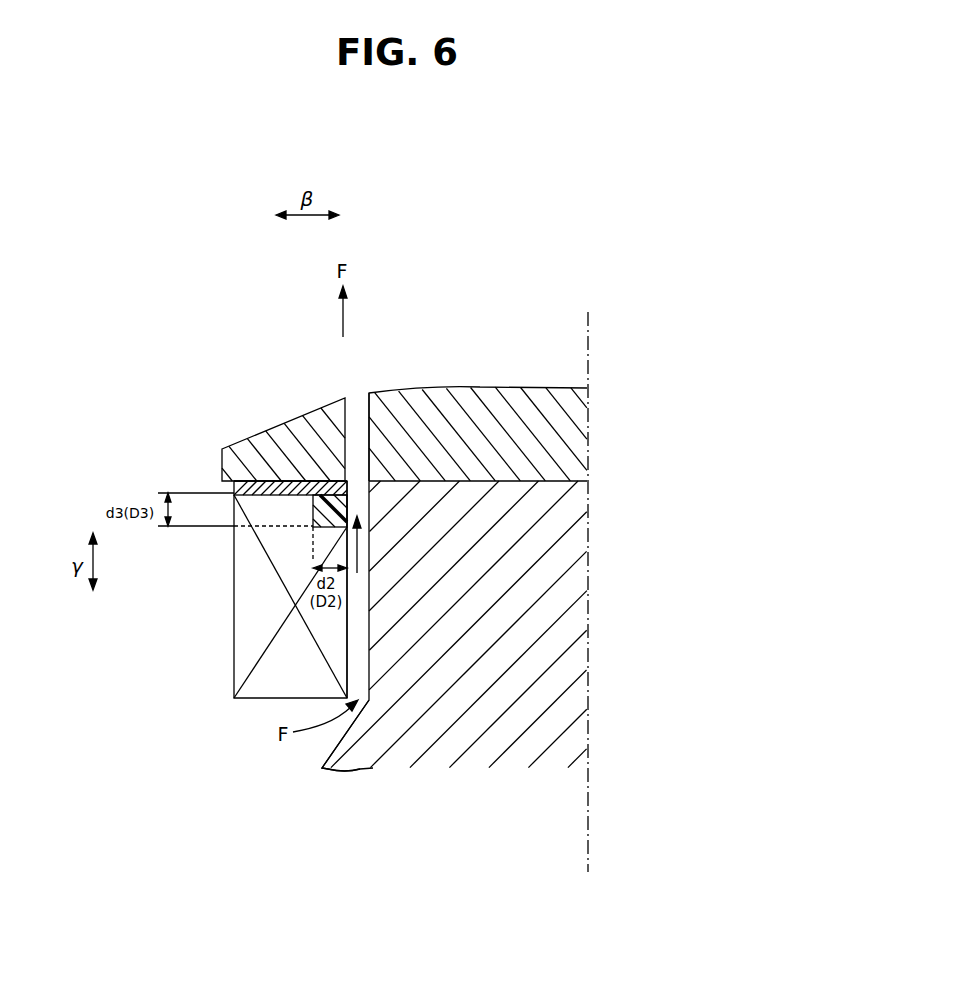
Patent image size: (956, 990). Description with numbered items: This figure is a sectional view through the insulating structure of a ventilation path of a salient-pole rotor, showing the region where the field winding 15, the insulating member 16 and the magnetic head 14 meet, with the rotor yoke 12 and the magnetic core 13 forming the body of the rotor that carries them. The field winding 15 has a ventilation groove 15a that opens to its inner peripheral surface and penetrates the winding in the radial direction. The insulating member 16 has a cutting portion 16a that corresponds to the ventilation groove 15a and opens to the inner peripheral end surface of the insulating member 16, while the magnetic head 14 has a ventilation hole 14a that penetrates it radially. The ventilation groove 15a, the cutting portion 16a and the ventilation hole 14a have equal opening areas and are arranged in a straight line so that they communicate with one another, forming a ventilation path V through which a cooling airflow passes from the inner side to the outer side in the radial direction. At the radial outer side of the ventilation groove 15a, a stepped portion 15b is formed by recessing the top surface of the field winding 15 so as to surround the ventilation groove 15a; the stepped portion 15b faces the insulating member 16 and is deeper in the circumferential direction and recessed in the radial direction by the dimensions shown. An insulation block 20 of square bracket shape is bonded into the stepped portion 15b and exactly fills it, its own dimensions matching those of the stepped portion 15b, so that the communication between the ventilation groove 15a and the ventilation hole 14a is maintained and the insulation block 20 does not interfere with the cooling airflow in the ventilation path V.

The rotor yoke 12 is at (324, 756).
The magnetic core 13 is at (577, 618).
The magnetic head 14 is at (500, 387).
The ventilation hole 14a is at (346, 404).
The field winding 15 is at (250, 614).
The ventilation groove 15a is at (348, 638).
The stepped portion 15b is at (290, 452).
The insulating member 16 is at (272, 496).
The cutting portion 16a is at (348, 486).
The insulation block 20 is at (312, 520).
The ventilation path V is at (364, 503).